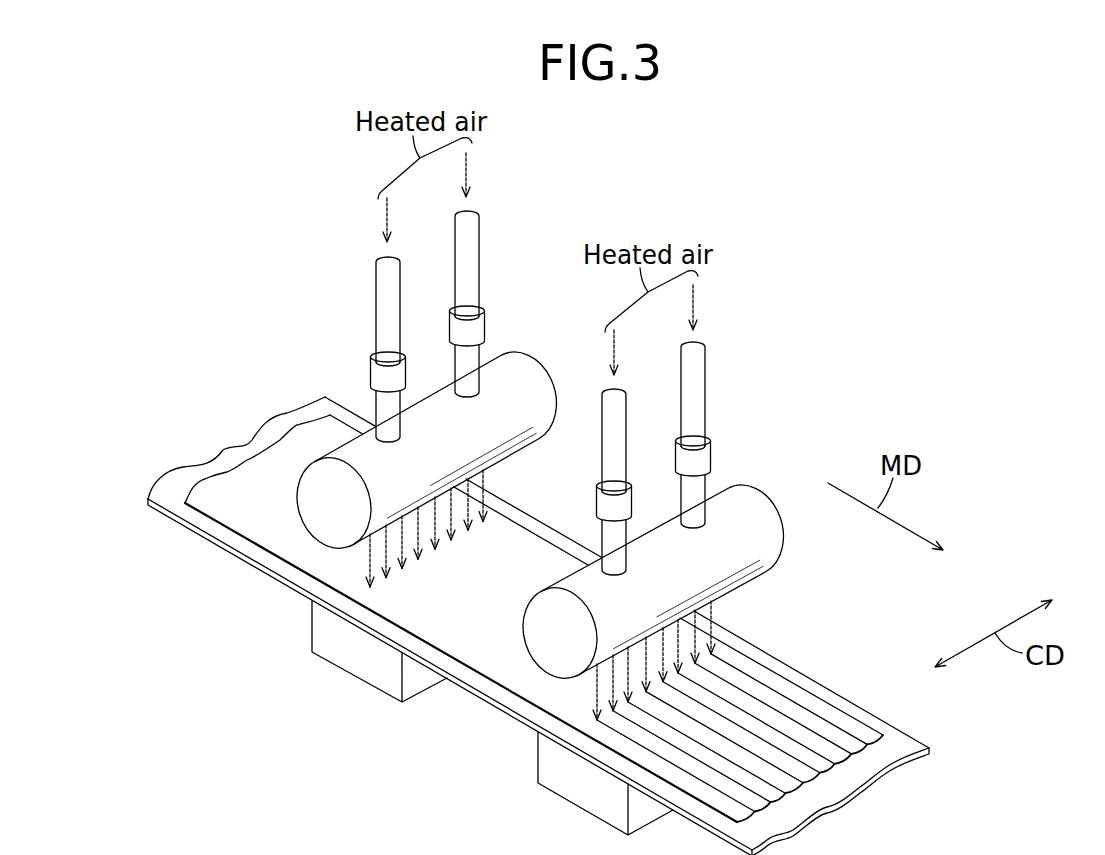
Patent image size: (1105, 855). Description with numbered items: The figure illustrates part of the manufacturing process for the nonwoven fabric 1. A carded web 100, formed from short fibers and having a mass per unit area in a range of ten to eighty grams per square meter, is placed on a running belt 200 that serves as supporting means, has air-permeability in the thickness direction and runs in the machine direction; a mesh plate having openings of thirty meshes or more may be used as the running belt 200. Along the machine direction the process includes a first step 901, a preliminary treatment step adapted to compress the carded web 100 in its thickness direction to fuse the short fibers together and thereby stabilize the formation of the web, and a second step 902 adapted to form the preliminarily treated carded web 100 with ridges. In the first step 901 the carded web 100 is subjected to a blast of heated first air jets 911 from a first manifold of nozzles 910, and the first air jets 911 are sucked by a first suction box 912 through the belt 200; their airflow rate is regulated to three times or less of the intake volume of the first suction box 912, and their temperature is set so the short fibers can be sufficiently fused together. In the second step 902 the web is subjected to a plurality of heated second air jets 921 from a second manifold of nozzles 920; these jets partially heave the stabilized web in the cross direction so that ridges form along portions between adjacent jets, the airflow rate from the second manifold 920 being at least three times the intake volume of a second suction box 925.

The nonwoven fabric 1 is at (812, 680).
The carded web 100 is at (288, 457).
The running belt 200 is at (207, 476).
The first step 901 is at (325, 660).
The second step 902 is at (551, 792).
The first manifold of nozzles 910 is at (518, 340).
The first air jets 911 is at (468, 508).
The first suction box 912 is at (360, 655).
The second manifold of nozzles 920 is at (743, 475).
The second air jets 921 is at (663, 650).
The second suction box 925 is at (580, 797).